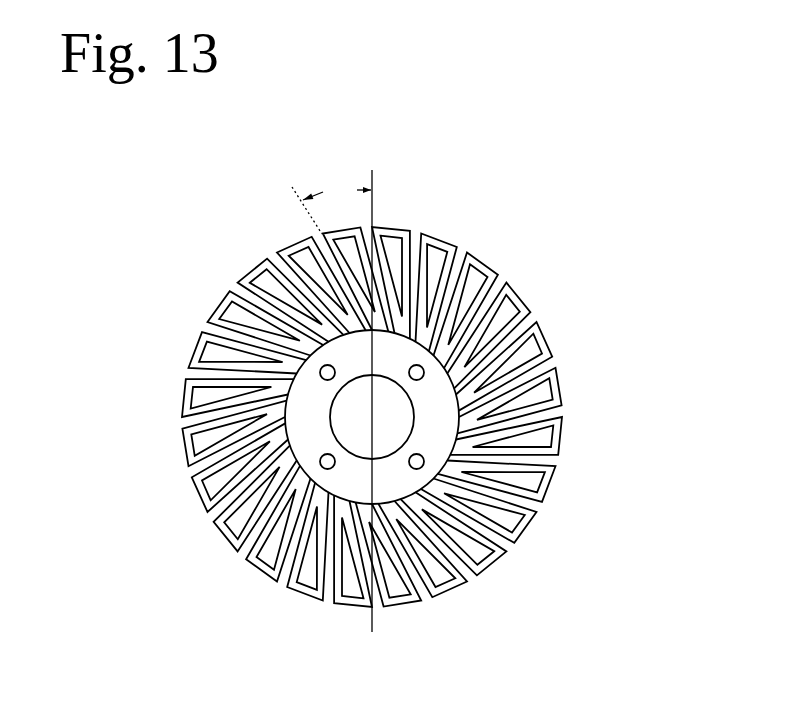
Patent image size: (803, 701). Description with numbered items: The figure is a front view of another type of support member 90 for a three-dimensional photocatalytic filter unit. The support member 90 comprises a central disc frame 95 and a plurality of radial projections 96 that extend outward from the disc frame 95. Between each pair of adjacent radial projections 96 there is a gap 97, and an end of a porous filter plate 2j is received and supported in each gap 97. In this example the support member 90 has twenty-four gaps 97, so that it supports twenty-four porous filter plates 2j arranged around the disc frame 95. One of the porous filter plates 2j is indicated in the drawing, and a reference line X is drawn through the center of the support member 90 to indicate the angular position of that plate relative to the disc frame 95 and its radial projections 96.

The support member 90 is at (454, 391).
The disc frame 95 is at (433, 428).
The radial projections 96 is at (478, 272).
The gap 97 is at (520, 328).
The porous filter plate 2j is at (318, 240).
The reference axis X is at (374, 203).